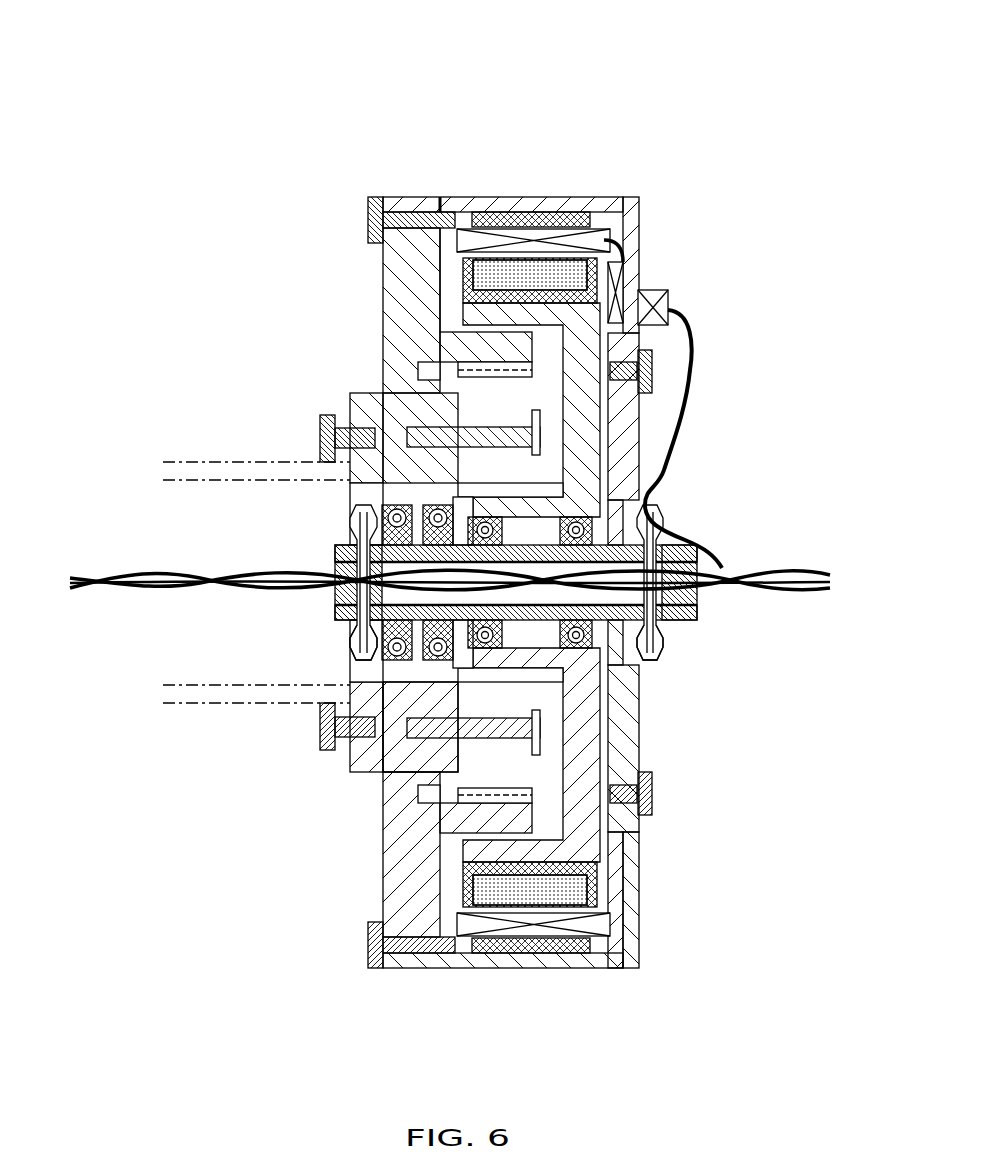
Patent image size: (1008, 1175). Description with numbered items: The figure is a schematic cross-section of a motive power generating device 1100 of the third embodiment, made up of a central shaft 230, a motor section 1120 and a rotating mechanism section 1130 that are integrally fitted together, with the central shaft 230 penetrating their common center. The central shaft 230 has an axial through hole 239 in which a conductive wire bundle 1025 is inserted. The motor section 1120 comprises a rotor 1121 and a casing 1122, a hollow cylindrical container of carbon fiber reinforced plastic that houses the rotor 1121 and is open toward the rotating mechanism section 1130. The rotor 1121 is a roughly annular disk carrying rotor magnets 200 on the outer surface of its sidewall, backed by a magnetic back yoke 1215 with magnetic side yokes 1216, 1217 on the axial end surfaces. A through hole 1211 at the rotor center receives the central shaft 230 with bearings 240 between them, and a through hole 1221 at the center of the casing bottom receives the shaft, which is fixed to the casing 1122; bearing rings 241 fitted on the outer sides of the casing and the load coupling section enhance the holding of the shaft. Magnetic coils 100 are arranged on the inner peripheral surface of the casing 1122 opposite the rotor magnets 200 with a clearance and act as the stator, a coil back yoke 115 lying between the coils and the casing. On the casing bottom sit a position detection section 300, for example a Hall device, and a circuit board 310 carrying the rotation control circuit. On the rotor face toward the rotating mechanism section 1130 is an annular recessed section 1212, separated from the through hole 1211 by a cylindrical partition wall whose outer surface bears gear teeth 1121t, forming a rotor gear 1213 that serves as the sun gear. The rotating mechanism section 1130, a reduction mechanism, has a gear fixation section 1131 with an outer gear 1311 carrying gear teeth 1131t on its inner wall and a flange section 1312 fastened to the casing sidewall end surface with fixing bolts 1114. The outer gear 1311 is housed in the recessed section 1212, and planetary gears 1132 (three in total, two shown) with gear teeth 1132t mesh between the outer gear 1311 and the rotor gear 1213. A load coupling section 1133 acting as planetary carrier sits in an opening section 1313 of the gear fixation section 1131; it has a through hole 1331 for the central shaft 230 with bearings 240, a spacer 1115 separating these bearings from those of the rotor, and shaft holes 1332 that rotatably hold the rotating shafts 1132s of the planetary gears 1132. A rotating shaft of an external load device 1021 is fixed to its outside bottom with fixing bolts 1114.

The motive power generating device 1100 is at (457, 505).
The magnetic coils 100 is at (614, 541).
The motor section 1120 is at (587, 536).
The rotor 1121 is at (624, 435).
The through hole 1221 is at (630, 690).
The magnetic side yoke 1217 is at (440, 196).
The recessed section 1212 is at (648, 345).
The gear teeth 1121t is at (612, 790).
The rotating mechanism section 1130 is at (363, 558).
The gear fixation section 1131 is at (386, 542).
The flange section 1312 is at (410, 280).
The outer gear 1311 is at (455, 330).
The gear teeth 1131t is at (470, 350).
The gear teeth 1132t is at (470, 365).
The rotating shaft 1132s is at (402, 390).
The fixing bolts 1114 is at (368, 222).
The load coupling section 1133 is at (365, 420).
The planetary gears 1132 is at (410, 400).
The opening section 1313 is at (402, 768).
The through hole 1331 is at (355, 480).
The shaft holes 1332 is at (325, 428).
The coil back yoke 115 is at (519, 212).
The magnetic side yoke 1216 is at (602, 238).
The magnetic back yoke 1215 is at (487, 268).
The rotor magnets 200 is at (548, 268).
The casing 1122 is at (592, 445).
The rotor gear 1213 is at (586, 702).
The through hole 1211 is at (600, 480).
The external load device 1021 is at (205, 462).
The spacer 1115 is at (440, 607).
The central shaft 230 is at (506, 584).
The through hole 239 is at (684, 606).
The bearings 240 is at (352, 532).
The bearing rings 241 is at (350, 646).
The position detection section 300 is at (626, 265).
The circuit board 310 is at (641, 298).
The conductive wire bundle 1025 is at (176, 547).